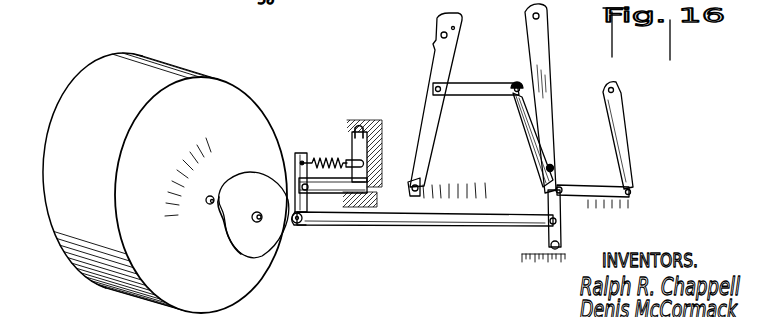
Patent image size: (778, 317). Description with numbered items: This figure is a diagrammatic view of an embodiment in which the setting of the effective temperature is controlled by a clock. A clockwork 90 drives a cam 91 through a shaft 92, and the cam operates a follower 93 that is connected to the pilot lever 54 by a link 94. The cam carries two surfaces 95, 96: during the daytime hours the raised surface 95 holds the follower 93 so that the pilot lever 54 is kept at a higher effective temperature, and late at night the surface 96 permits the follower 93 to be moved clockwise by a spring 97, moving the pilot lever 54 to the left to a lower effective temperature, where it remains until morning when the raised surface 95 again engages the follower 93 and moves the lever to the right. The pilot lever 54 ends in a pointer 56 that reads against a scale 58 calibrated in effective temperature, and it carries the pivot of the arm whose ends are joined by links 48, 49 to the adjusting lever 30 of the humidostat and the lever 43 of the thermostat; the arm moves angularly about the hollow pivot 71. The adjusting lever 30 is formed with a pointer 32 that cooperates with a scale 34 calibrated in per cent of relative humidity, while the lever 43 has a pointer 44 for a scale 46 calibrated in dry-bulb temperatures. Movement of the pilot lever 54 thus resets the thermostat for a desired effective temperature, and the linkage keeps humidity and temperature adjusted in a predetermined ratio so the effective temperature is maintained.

The adjusting lever 30 is at (433, 116).
The pointer 32 is at (405, 190).
The scale 34 is at (486, 190).
The lever 43 is at (622, 125).
The pointer 44 is at (633, 197).
The scale 46 is at (582, 202).
The link 48 is at (470, 88).
The link 49 is at (578, 185).
The pilot lever 54 is at (545, 45).
The pointer 56 is at (561, 247).
The scale 58 is at (520, 258).
The hollow pivot 71 is at (545, 172).
The clockwork 90 is at (245, 107).
The cam 91 is at (255, 197).
The shaft 92 is at (209, 205).
The follower 93 is at (292, 152).
The link 94 is at (337, 227).
The raised cam surface 95 is at (245, 172).
The cam surface 96 is at (240, 257).
The spring 97 is at (338, 156).